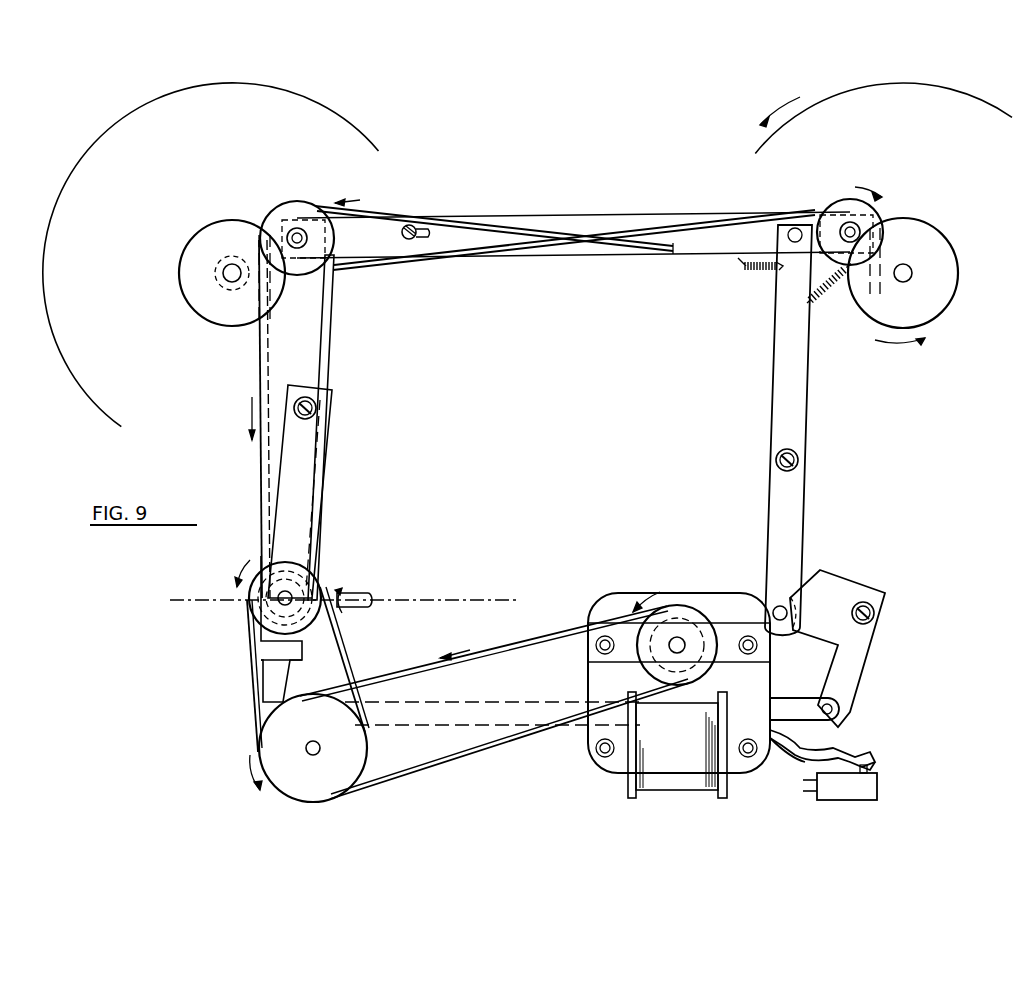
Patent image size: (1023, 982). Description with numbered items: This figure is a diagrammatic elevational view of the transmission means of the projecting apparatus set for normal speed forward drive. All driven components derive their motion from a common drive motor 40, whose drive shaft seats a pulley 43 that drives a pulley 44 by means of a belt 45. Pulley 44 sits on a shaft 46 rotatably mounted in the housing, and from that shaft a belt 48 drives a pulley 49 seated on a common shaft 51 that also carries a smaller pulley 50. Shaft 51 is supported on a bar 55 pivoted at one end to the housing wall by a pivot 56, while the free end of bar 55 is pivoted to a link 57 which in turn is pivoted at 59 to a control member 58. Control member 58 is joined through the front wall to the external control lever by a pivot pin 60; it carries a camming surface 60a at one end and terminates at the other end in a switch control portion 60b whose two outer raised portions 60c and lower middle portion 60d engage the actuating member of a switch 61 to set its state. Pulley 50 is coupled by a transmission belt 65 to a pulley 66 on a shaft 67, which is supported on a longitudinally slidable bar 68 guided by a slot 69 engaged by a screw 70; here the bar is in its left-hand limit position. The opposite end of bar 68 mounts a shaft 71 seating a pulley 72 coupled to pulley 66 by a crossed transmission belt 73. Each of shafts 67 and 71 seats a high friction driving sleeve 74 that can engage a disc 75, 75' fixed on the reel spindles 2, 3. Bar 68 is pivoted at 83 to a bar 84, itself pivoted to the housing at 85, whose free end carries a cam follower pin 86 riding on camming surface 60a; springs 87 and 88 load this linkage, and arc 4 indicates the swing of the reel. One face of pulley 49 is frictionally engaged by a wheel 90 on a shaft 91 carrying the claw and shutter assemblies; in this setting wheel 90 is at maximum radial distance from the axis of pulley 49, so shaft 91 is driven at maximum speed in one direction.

The reel spindle 2 is at (230, 282).
The reel spindle 3 is at (908, 270).
The arc of rotation 4 is at (83, 170).
The drive motor 40 is at (610, 770).
The pulley 43 is at (678, 606).
The pulley 44 is at (290, 782).
The belt 45 is at (448, 752).
The shaft 46 is at (314, 755).
The belt 48 is at (251, 683).
The pulley 49 is at (246, 588).
The pulley 50 is at (290, 582).
The shaft 51 is at (276, 602).
The bar 55 is at (300, 462).
The pivot 56 is at (303, 398).
The link 57 is at (462, 710).
The control member 58 is at (852, 656).
The pivot 59 is at (840, 709).
The pivot pin 60 is at (875, 613).
The camming surface 60a is at (797, 613).
The switch control portion 60b is at (836, 745).
The raised portions 60c is at (872, 762).
The middle portion 60d is at (800, 752).
The switch 61 is at (845, 795).
The transmission belt 65 is at (330, 335).
The pulley 66 is at (303, 212).
The shaft 67 is at (299, 250).
The bar 68 is at (583, 222).
The slot 69 is at (420, 240).
The screw 70 is at (410, 225).
The shaft 71 is at (866, 238).
The pulley 72 is at (825, 222).
The transmission belt 73 is at (717, 212).
The driving sleeve 74 is at (291, 229).
The disc 75 is at (231, 262).
The right reel pulley 75' is at (915, 281).
The pivot 83 is at (791, 228).
The bar 84 is at (806, 406).
The pivot 85 is at (800, 462).
The cam follower pin 86 is at (774, 607).
The spring 87 is at (763, 274).
The spring 88 is at (829, 297).
The wheel 90 is at (305, 640).
The shaft 91 is at (364, 596).